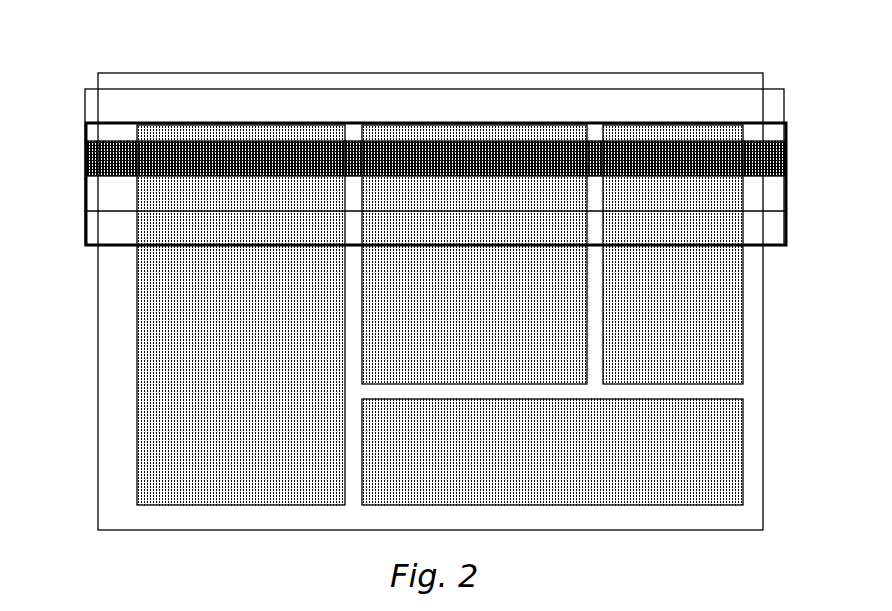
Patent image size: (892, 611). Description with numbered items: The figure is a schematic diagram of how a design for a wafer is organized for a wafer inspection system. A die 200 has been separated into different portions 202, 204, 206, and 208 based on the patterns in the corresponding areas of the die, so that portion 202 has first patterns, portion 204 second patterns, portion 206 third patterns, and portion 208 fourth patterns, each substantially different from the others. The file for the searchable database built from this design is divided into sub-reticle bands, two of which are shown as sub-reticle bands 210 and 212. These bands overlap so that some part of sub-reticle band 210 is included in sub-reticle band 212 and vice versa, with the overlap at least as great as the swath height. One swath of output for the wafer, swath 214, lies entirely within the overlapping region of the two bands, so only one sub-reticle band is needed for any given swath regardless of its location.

The die 200 is at (613, 73).
The portion 202 is at (137, 417).
The portion 204 is at (475, 136).
The portion 206 is at (743, 330).
The portion 208 is at (743, 451).
The sub-reticle band 210 is at (709, 89).
The sub-reticle band 212 is at (787, 225).
The swath 214 is at (773, 147).